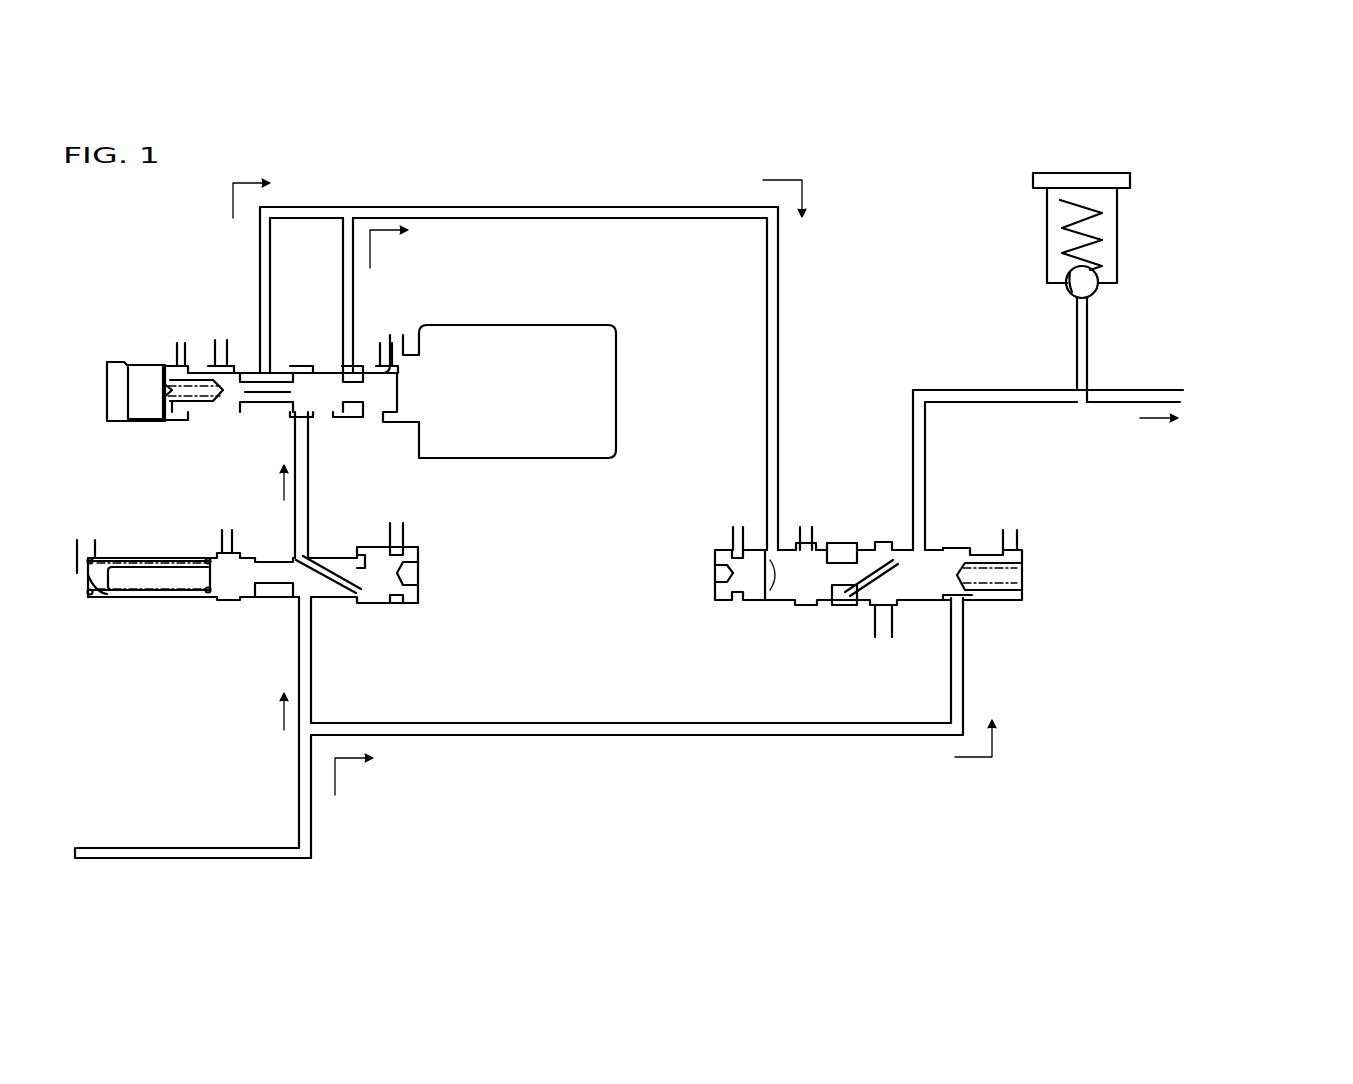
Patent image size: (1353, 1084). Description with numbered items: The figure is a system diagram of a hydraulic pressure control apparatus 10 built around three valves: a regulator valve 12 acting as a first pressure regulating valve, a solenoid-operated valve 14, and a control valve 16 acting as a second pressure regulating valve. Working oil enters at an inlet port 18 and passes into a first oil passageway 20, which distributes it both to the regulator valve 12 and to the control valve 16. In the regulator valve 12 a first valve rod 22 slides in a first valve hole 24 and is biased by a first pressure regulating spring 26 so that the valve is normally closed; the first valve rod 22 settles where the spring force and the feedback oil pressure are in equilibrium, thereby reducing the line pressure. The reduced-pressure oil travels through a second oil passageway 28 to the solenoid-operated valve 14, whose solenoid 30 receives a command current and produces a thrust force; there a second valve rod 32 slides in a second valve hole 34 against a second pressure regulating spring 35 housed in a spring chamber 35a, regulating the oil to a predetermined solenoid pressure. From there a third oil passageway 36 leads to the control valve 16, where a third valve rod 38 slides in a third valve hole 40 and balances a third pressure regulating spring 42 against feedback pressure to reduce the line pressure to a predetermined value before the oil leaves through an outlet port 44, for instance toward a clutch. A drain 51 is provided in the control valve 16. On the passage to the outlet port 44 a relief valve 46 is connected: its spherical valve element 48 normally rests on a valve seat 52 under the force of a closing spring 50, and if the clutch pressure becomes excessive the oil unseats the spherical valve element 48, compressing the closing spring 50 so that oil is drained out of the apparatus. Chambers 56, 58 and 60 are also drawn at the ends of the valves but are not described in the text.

The hydraulic pressure control apparatus 10 is at (872, 157).
The regulator valve 12 is at (437, 549).
The solenoid-operated valve 14 is at (630, 322).
The control valve 16 is at (1042, 558).
The inlet port 18 is at (75, 850).
The first oil passageway 20 is at (312, 836).
The first valve rod 22 is at (256, 588).
The first valve hole 24 is at (85, 576).
The first pressure regulating spring 26 is at (138, 557).
The second oil passageway 28 is at (310, 492).
The solenoid 30 is at (545, 440).
The second valve rod 32 is at (320, 375).
The second valve hole 34 is at (268, 392).
The second pressure regulating spring 35 is at (178, 383).
The spring chamber 35a is at (180, 418).
The third oil passageway 36 is at (779, 275).
The third valve rod 38 is at (862, 548).
The third valve hole 40 is at (792, 603).
The third pressure regulating spring 42 is at (1018, 577).
The outlet port 44 is at (1185, 397).
The relief valve 46 is at (1150, 207).
The spherical valve element 48 is at (1097, 290).
The closing spring 50 is at (1063, 228).
The drain 51 is at (885, 622).
The valve seat 52 is at (1074, 293).
The spring chamber 56 is at (390, 600).
The actuator 58 is at (143, 385).
The spring chamber 60 is at (752, 548).